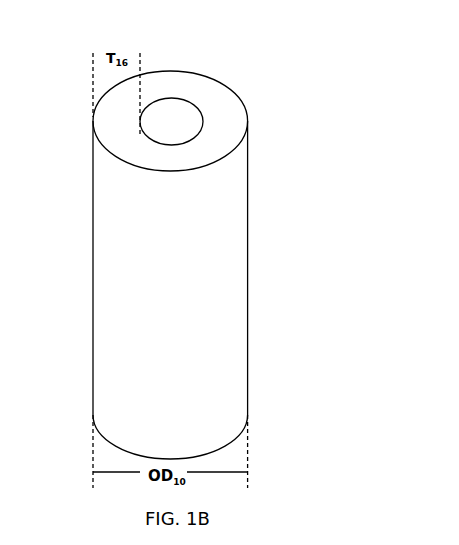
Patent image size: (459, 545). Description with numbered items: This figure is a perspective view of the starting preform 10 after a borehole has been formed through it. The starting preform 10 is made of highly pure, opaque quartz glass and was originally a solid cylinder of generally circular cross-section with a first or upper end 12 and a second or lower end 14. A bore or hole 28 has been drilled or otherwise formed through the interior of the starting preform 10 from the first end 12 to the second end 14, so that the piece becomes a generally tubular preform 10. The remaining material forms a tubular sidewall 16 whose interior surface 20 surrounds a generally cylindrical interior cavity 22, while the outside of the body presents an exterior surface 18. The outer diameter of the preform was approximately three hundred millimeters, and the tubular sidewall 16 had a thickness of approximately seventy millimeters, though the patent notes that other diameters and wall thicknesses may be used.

The starting preform 10 is at (340, 150).
The first end 12 is at (233, 103).
The second end 14 is at (123, 442).
The tubular sidewall 16 is at (243, 273).
The exterior surface 18 is at (213, 335).
The interior surface 20 is at (178, 128).
The interior cavity 22 is at (195, 120).
The bore 28 is at (170, 107).